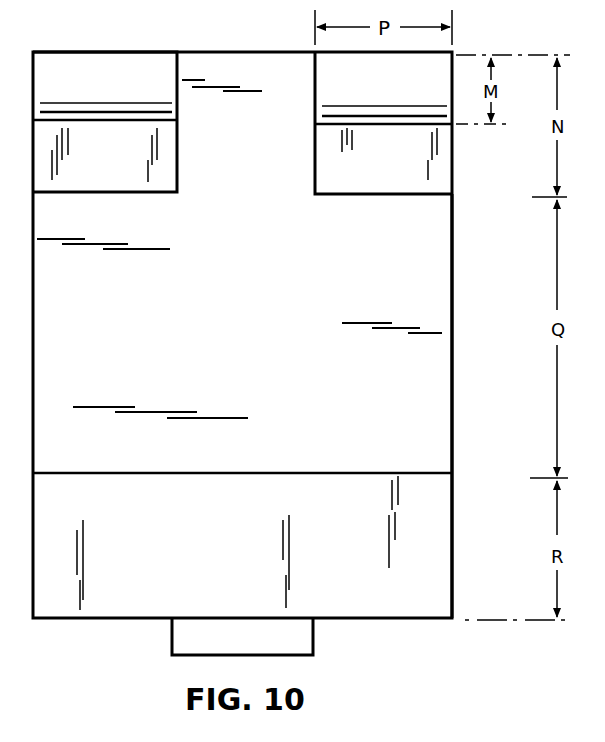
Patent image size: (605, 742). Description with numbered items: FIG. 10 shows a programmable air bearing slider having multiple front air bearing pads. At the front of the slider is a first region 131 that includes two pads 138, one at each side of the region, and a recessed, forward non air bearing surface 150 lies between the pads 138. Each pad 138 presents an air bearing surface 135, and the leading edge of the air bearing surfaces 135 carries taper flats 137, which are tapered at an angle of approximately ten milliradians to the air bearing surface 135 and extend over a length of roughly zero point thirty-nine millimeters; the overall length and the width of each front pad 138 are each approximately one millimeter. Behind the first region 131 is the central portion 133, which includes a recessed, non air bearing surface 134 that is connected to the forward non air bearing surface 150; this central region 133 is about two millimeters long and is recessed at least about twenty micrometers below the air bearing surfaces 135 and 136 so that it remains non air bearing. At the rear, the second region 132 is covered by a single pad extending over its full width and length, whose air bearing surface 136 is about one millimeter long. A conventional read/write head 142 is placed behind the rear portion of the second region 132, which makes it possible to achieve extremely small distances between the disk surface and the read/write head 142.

The first region 131 is at (258, 133).
The second region 132 is at (264, 565).
The central portion 133 is at (272, 360).
The recessed non air bearing surface 134 is at (435, 382).
The air bearing surfaces 135 is at (325, 155).
The air bearing surface 136 is at (435, 580).
The taper flats 137 is at (76, 60).
The pads 138 is at (124, 168).
The read/write head 142 is at (266, 650).
The forward non air bearing surface 150 is at (255, 62).